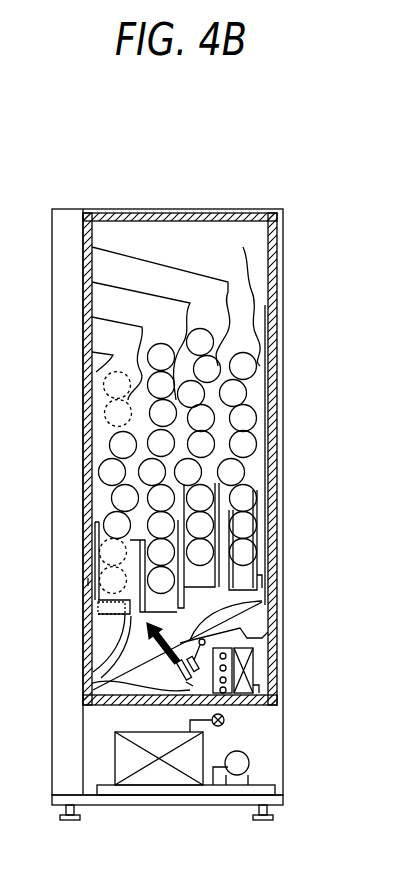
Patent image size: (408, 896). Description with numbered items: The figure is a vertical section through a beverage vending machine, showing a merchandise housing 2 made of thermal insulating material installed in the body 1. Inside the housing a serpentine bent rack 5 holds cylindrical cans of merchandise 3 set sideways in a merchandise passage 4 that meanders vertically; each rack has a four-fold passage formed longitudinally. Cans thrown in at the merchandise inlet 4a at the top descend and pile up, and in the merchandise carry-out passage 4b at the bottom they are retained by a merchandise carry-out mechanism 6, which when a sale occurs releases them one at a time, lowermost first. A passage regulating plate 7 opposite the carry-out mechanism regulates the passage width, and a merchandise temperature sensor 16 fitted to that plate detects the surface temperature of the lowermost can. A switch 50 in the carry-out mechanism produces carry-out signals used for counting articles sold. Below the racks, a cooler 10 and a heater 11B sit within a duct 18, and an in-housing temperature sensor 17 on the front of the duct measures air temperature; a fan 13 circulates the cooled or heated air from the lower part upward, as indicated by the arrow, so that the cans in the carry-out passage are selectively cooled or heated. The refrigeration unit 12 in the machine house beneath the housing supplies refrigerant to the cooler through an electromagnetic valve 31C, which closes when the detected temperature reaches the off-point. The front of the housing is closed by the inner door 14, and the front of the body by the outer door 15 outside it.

The body 1 is at (262, 209).
The merchandise housing 2 is at (213, 219).
The inner door 14 is at (95, 211).
The outer door 15 is at (72, 271).
The merchandise inlet 4a is at (100, 302).
The bent rack 5 is at (110, 361).
The merchandise passage 4 is at (100, 464).
The passage regulating plate 7 is at (95, 552).
The merchandise temperature sensor 16 is at (86, 582).
The merchandise 3 is at (98, 612).
The switch 50 is at (100, 619).
The merchandise carry-out passage 4b is at (104, 648).
The merchandise carry-out mechanism 6 is at (106, 678).
The duct 18 is at (135, 697).
The temperature sensor 17 is at (268, 632).
The fan 13 is at (262, 601).
The cooler 10 is at (248, 666).
The heater 11B is at (224, 721).
The refrigeration unit 12 is at (110, 760).
The electromagnetic valve 31C is at (238, 705).